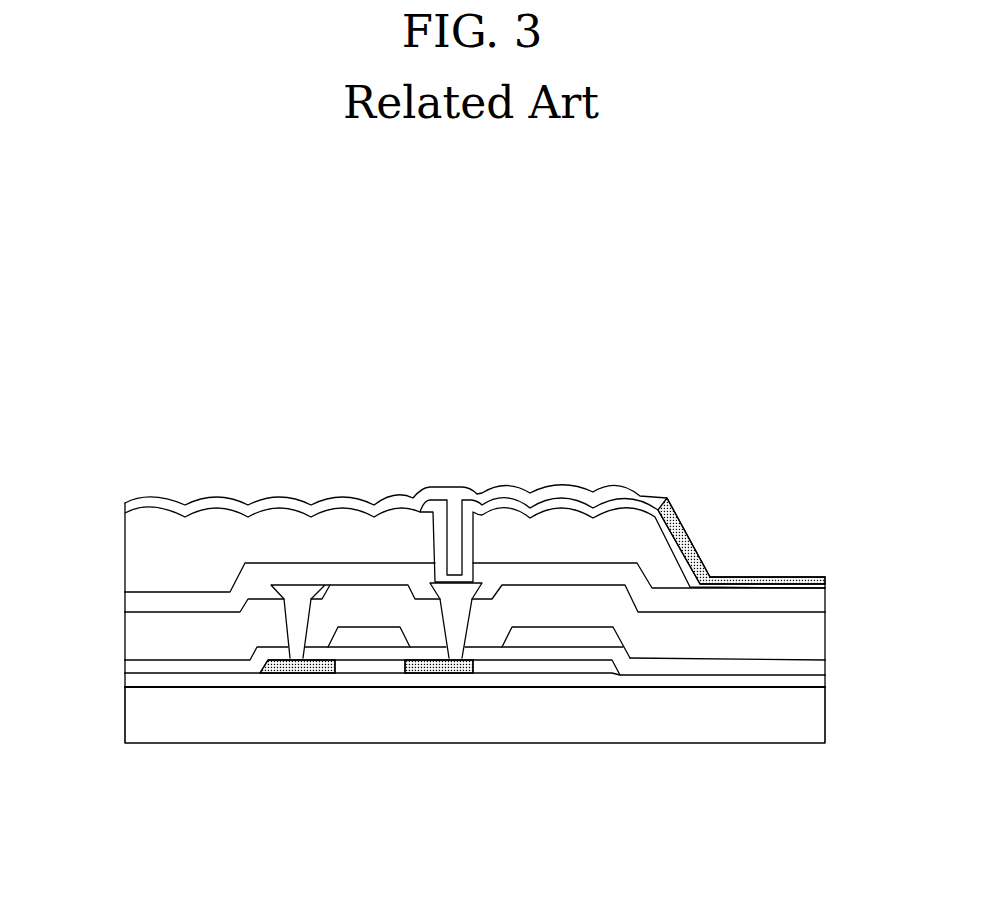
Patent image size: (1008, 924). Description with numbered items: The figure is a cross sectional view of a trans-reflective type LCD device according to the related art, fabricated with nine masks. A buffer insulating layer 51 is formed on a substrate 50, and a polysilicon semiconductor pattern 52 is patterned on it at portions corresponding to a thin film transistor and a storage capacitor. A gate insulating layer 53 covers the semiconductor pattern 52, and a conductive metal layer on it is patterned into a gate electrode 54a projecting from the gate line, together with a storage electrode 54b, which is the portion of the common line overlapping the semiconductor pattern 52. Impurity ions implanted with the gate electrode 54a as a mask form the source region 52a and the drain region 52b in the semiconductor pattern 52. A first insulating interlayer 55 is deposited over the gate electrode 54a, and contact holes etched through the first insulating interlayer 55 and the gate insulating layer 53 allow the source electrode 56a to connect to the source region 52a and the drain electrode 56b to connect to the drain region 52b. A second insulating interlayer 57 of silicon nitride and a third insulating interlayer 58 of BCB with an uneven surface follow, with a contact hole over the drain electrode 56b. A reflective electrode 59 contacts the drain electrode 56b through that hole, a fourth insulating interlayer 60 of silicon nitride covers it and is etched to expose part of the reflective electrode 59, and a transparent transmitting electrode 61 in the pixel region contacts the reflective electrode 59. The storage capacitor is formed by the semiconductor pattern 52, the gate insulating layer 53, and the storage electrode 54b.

The substrate 50 is at (813, 727).
The buffer insulating layer 51 is at (813, 678).
The semiconductor pattern 52 is at (387, 666).
The source region 52a is at (284, 666).
The drain region 52b is at (449, 666).
The gate insulating layer 53 is at (813, 666).
The gate electrode 54a is at (363, 633).
The storage electrode 54b is at (585, 634).
The first insulating interlayer 55 is at (813, 632).
The source electrode 56a is at (295, 592).
The drain electrode 56b is at (455, 633).
The second insulating interlayer 57 is at (140, 601).
The third insulating interlayer 58 is at (140, 547).
The reflective electrode 59 is at (558, 508).
The fourth insulating interlayer 60 is at (617, 492).
The transmitting electrode 61 is at (798, 578).